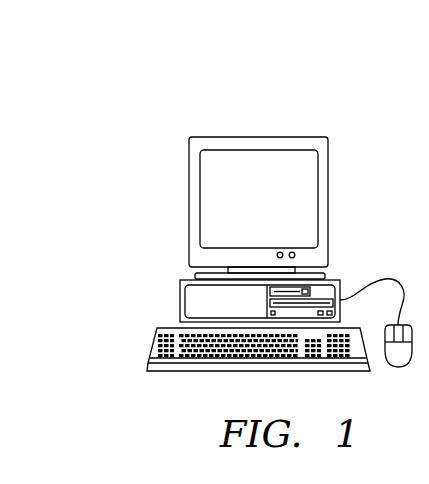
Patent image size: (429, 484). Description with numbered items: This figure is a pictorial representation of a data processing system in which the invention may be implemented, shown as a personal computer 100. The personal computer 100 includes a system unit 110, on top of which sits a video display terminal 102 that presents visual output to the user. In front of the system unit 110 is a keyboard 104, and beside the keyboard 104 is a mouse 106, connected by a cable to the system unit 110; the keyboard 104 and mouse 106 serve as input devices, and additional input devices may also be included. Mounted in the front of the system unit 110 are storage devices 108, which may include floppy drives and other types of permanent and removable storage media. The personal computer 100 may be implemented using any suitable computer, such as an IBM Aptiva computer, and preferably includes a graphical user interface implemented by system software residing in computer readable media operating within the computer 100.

The personal computer 100 is at (280, 112).
The video display terminal 102 is at (207, 201).
The keyboard 104 is at (178, 350).
The mouse 106 is at (398, 348).
The storage devices 108 is at (303, 291).
The system unit 110 is at (180, 301).